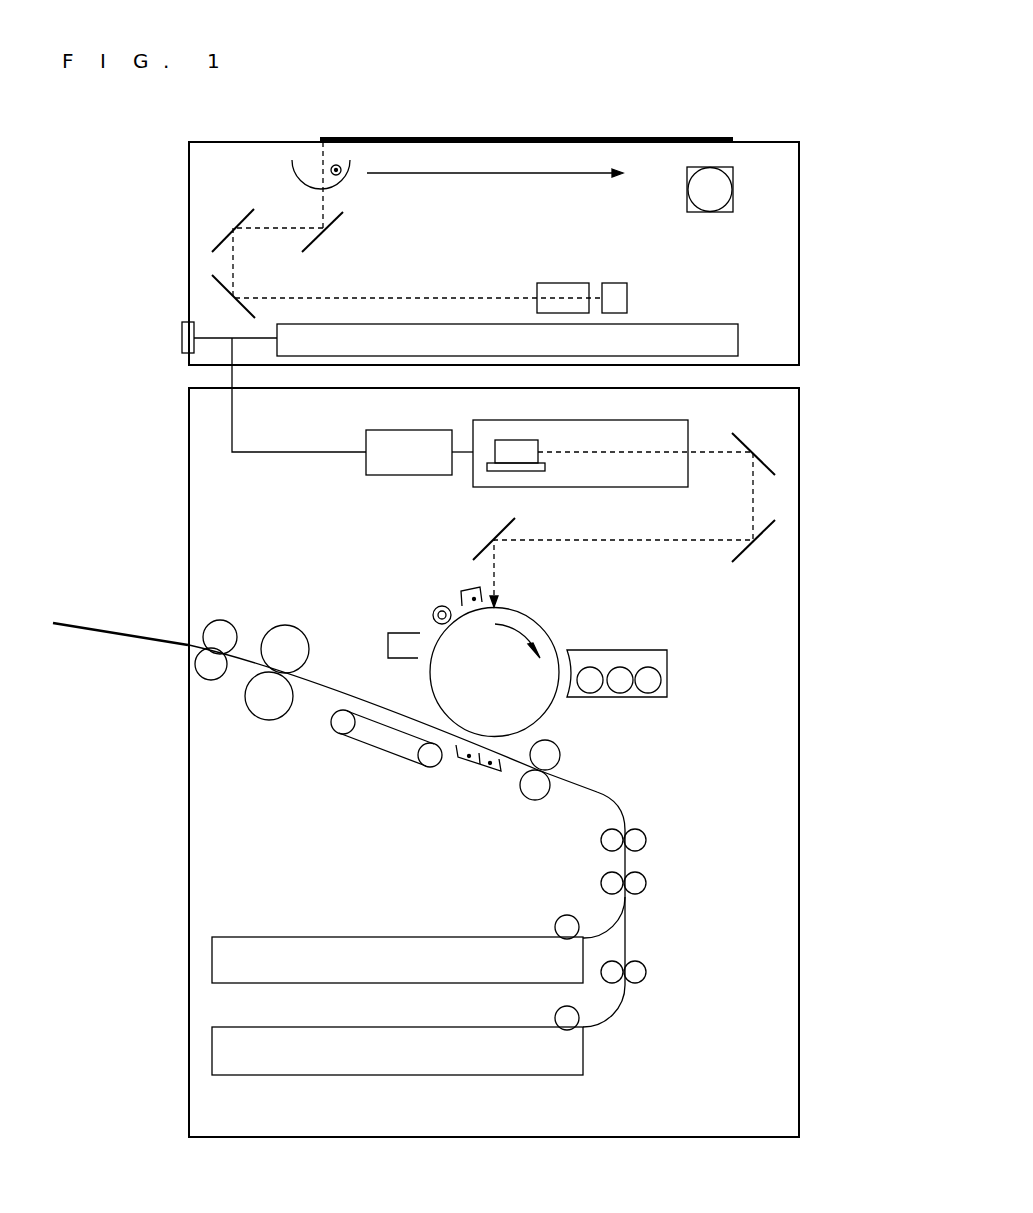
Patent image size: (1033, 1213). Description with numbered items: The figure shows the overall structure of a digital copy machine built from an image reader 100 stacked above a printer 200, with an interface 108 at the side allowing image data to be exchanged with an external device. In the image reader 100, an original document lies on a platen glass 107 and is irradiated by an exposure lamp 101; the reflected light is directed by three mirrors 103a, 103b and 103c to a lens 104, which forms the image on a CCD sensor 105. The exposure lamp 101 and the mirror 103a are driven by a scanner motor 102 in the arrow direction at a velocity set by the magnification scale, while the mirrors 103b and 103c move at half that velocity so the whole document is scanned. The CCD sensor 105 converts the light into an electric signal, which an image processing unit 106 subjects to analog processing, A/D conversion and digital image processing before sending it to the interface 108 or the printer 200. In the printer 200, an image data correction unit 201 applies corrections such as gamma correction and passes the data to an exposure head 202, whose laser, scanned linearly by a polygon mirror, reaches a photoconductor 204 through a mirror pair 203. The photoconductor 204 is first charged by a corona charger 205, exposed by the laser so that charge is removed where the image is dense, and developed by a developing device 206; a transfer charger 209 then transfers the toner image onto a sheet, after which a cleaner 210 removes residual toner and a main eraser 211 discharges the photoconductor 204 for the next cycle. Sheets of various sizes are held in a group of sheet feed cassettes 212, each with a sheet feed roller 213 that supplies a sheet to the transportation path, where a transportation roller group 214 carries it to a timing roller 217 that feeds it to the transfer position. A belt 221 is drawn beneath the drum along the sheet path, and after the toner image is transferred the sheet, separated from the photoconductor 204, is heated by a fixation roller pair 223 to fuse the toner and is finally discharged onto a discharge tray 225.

The image reader 100 is at (518, 253).
The exposure lamp 101 is at (328, 150).
The scanner motor 102 is at (733, 189).
The mirror 103a is at (341, 235).
The mirror 103b is at (226, 222).
The mirror 103c is at (226, 301).
The lens 104 is at (563, 284).
The CCD sensor 105 is at (618, 284).
The image processing unit 106 is at (531, 340).
The platen glass 107 is at (526, 124).
The interface 108 is at (208, 331).
The printer 200 is at (518, 762).
The image data correction unit 201 is at (409, 452).
The exposure head 202 is at (580, 440).
The mirror pair 203 is at (761, 500).
The photoconductor 204 is at (494, 672).
The corona charger 205 is at (457, 585).
The developing device 206 is at (638, 673).
The transfer charger 209 is at (487, 774).
The cleaner 210 is at (382, 645).
The main eraser 211 is at (420, 613).
The sheet feed cassette 212 is at (393, 1006).
The sheet feed roller 213 is at (552, 960).
The transportation roller group 214 is at (645, 906).
The timing roller 217 is at (563, 770).
The conveying belt 221 is at (403, 751).
The fixation roller pair 223 is at (277, 659).
The discharge tray 225 is at (120, 624).